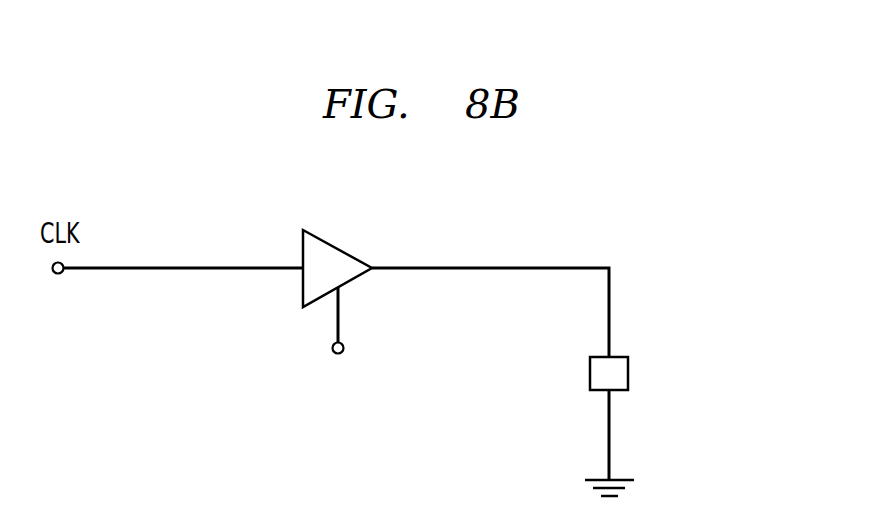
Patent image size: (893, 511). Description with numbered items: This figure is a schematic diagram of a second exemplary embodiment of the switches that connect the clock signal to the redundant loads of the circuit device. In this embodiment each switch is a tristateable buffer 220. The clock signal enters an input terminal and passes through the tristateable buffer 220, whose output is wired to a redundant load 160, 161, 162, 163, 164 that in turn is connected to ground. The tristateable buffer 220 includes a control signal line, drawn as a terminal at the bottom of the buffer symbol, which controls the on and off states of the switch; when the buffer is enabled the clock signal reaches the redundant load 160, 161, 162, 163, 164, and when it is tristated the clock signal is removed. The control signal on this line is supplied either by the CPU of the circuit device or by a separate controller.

The tristateable buffer 220 is at (374, 219).
The redundant load 160 is at (702, 373).
The redundant load 161 is at (702, 373).
The redundant load 162 is at (702, 383).
The redundant load 163 is at (702, 383).
The redundant load 164 is at (702, 383).